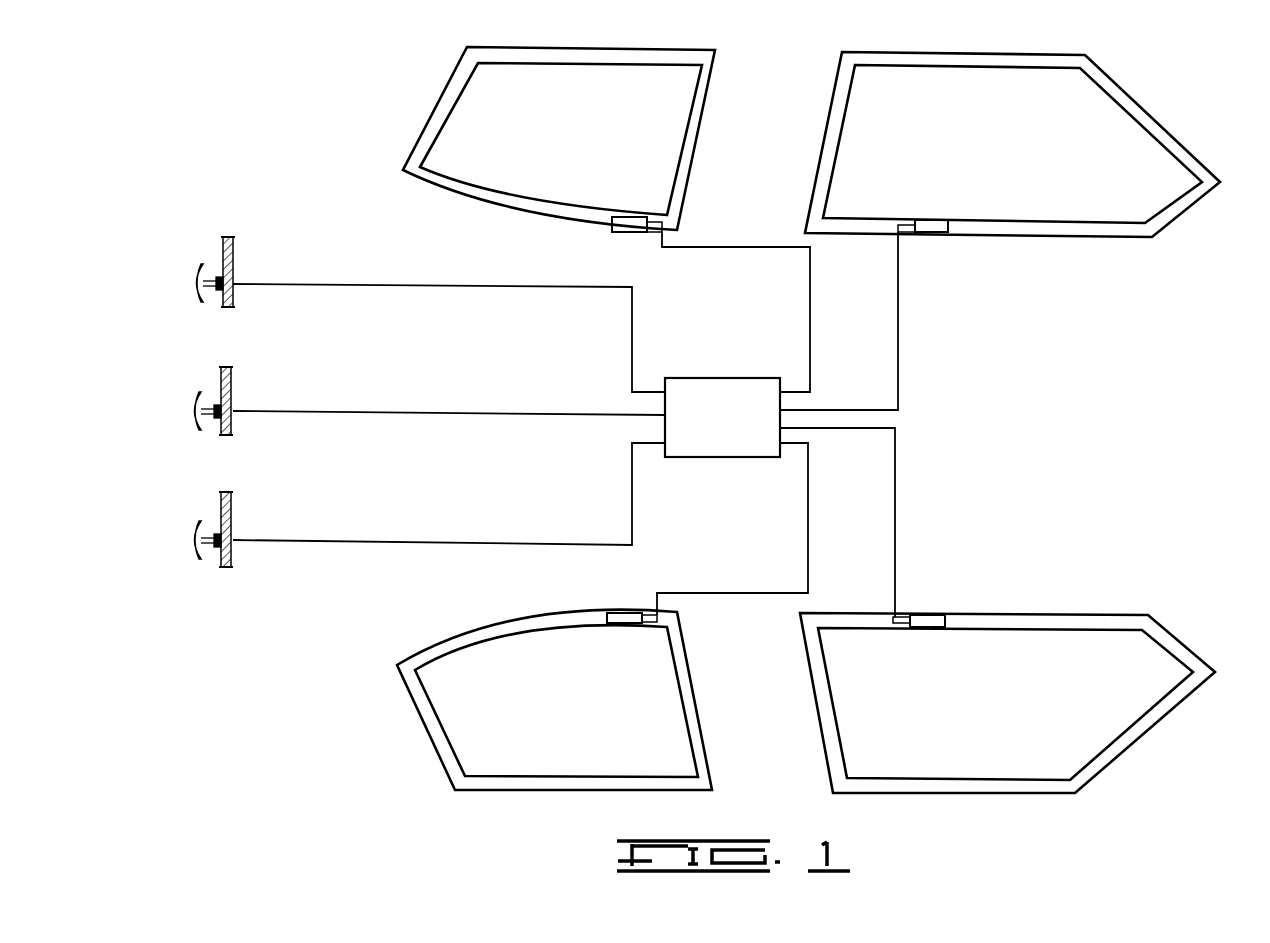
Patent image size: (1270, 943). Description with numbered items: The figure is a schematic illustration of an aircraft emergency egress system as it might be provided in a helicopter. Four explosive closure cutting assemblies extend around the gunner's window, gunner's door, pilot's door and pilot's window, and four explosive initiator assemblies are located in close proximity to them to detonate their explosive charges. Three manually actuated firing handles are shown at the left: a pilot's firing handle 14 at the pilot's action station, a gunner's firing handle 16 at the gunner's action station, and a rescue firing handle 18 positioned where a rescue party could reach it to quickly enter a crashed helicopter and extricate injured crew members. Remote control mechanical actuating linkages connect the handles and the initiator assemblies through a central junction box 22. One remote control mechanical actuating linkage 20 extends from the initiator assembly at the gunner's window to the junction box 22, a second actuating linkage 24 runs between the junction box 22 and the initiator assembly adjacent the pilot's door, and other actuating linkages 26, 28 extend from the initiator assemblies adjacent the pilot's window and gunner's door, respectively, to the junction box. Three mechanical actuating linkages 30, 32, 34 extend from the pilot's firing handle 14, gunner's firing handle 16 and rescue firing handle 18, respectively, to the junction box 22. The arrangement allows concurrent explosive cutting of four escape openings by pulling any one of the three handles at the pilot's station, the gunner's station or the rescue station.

The pilot's firing handle 14 is at (212, 274).
The gunner's firing handle 16 is at (211, 403).
The rescue firing handle 18 is at (212, 532).
The remote control mechanical actuating linkage 20 is at (713, 253).
The junction box 22 is at (708, 448).
The second actuating linkage 24 is at (897, 328).
The actuating linkage 26 is at (895, 504).
The actuating linkage 28 is at (808, 503).
The mechanical actuating linkage 30 is at (440, 292).
The mechanical actuating linkage 32 is at (446, 418).
The mechanical actuating linkage 34 is at (431, 547).